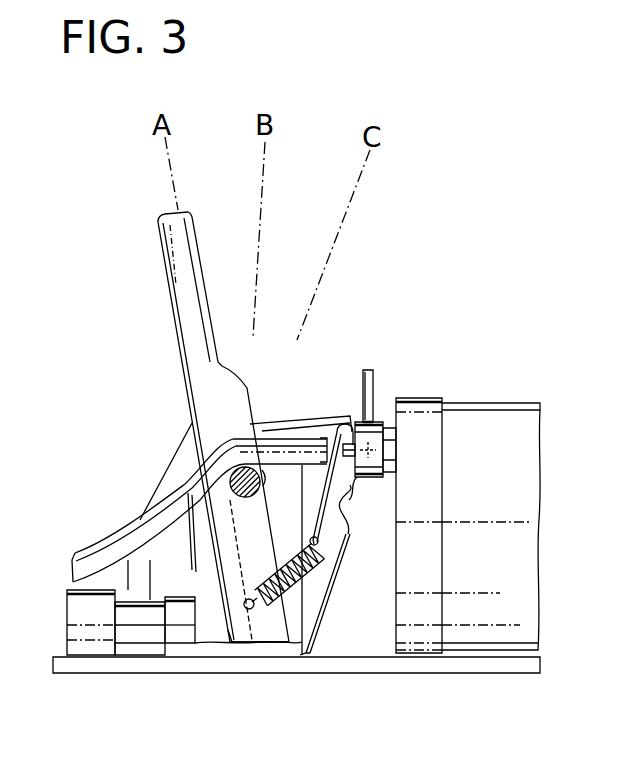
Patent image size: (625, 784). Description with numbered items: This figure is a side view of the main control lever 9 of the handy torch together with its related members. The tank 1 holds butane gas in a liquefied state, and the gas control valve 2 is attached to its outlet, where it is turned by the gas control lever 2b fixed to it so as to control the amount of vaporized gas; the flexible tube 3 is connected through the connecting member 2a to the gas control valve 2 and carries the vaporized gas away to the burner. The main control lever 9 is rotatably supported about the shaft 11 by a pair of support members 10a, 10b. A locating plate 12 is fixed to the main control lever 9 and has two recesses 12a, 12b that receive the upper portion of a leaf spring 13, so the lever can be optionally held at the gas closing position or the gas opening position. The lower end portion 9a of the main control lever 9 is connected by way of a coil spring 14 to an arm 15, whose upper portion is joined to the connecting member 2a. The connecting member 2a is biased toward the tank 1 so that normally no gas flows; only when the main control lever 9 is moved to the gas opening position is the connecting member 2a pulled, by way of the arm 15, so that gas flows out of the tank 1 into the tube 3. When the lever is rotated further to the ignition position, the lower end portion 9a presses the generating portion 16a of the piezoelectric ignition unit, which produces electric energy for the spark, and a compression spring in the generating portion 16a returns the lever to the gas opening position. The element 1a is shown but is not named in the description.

The tank 1 is at (515, 420).
The mounting screw 1a is at (396, 453).
The gas control valve 2 is at (380, 420).
The connecting member 2a is at (345, 417).
The gas control lever 2b is at (370, 368).
The flexible tube 3 is at (110, 552).
The main control lever 9 is at (170, 265).
The lower end portion 9a is at (235, 647).
The support member 10a is at (192, 650).
The support member 10b is at (173, 465).
The shaft 11 is at (276, 470).
The locating plate 12 is at (326, 423).
The recess 12a is at (342, 534).
The recess 12b is at (352, 488).
The leaf spring 13 is at (315, 623).
The coil spring 14 is at (252, 610).
The arm 15 is at (332, 484).
The generating portion 16a is at (90, 647).